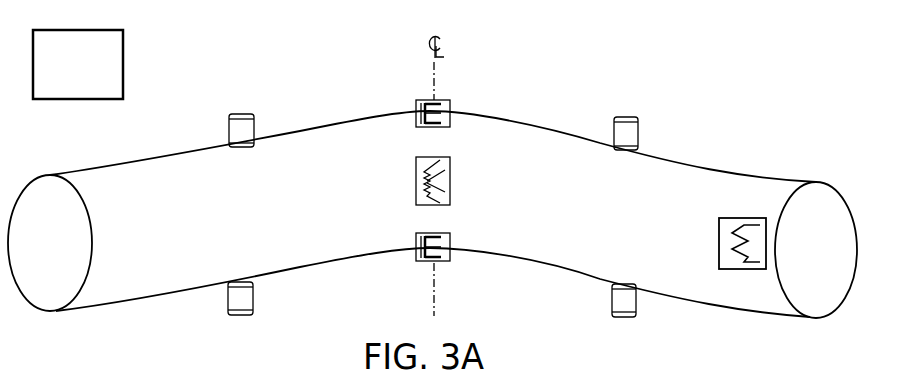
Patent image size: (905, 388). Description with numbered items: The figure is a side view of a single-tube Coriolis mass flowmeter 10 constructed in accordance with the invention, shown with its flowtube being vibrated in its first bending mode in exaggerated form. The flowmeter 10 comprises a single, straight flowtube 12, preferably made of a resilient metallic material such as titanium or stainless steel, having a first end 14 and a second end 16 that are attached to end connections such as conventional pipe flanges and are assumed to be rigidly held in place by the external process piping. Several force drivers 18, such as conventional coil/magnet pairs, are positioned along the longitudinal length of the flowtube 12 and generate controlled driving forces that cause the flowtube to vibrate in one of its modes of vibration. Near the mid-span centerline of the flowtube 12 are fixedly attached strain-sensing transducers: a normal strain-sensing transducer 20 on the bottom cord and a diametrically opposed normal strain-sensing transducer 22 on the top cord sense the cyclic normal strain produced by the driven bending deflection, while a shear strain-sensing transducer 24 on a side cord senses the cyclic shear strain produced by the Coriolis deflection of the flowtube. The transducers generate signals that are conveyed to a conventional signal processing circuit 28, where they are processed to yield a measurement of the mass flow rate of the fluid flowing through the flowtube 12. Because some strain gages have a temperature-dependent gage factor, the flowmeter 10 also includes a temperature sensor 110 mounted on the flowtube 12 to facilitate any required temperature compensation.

The Coriolis mass flowmeter 10 is at (432, 210).
The flowtube 12 is at (740, 173).
The first end 14 is at (54, 312).
The second end 16 is at (812, 319).
The force drivers 18 is at (255, 129).
The normal strain-sensing transducer 20 is at (437, 263).
The normal strain-sensing transducer 22 is at (437, 101).
The shear strain-sensing transducer 24 is at (450, 172).
The signal processing circuit 28 is at (92, 80).
The temperature sensor 110 is at (719, 233).